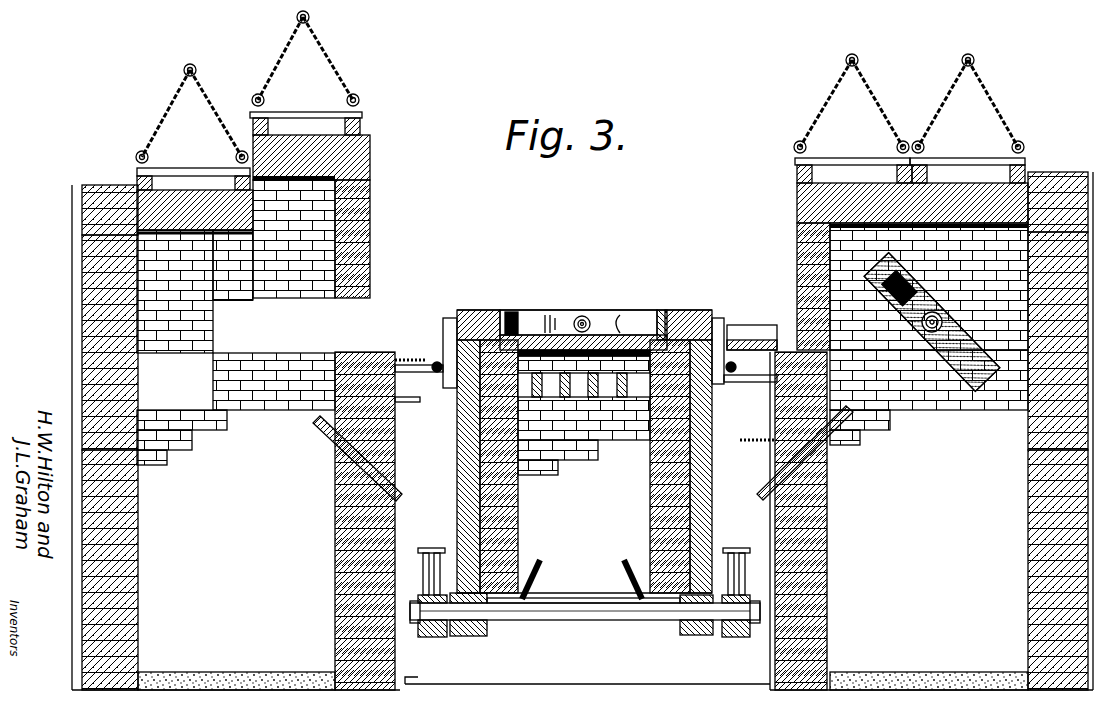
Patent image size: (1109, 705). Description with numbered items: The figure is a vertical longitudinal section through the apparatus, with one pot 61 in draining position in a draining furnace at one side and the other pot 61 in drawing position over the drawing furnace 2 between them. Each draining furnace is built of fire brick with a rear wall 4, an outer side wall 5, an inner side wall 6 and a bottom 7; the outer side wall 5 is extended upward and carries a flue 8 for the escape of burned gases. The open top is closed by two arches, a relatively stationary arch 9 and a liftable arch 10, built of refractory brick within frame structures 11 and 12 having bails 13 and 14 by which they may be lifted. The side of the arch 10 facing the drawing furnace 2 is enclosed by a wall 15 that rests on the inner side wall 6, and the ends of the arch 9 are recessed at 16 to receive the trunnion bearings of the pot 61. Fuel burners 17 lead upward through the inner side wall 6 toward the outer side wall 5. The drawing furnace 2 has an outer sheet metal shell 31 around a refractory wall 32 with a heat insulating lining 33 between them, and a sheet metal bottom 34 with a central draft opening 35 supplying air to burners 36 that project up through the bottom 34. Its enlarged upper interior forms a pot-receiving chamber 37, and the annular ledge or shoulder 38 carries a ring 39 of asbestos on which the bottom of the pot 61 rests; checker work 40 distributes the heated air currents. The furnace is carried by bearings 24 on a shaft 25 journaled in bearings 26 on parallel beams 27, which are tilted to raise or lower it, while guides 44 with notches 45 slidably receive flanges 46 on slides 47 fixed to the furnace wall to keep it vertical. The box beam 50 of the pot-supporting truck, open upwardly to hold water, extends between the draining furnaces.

The drawing furnace 2 is at (589, 424).
The rear wall 4 is at (290, 378).
The outer side wall 5 is at (133, 531).
The inner side wall 6 is at (355, 362).
The bottom 7 is at (232, 676).
The flue 8 is at (108, 190).
The arch 9 is at (150, 268).
The arch 10 is at (320, 210).
The frame structure 11 is at (215, 171).
The frame structure 12 is at (272, 118).
The bail 13 is at (205, 95).
The bail 14 is at (328, 63).
The wall 15 is at (372, 243).
The recess 16 is at (215, 322).
The fuel burner 17 is at (395, 450).
The bearing 24 is at (478, 636).
The shaft 25 is at (612, 623).
The bearing 26 is at (432, 638).
The beam 27 is at (428, 548).
The outer shell 31 is at (712, 475).
The wall 32 is at (677, 453).
The lining 33 is at (712, 500).
The bottom 34 is at (655, 603).
The draft opening 35 is at (565, 585).
The burner 36 is at (630, 560).
The pot-receiving chamber 37 is at (675, 312).
The annular ledge or shoulder 38 is at (700, 312).
The ring 39 is at (510, 312).
The checker work 40 is at (585, 395).
The guide 44 is at (432, 364).
The notch or groove 45 is at (455, 318).
The flange 46 is at (446, 388).
The slide 47 is at (475, 312).
The box beam 50 is at (752, 328).
The drawing pot 61 is at (960, 365).